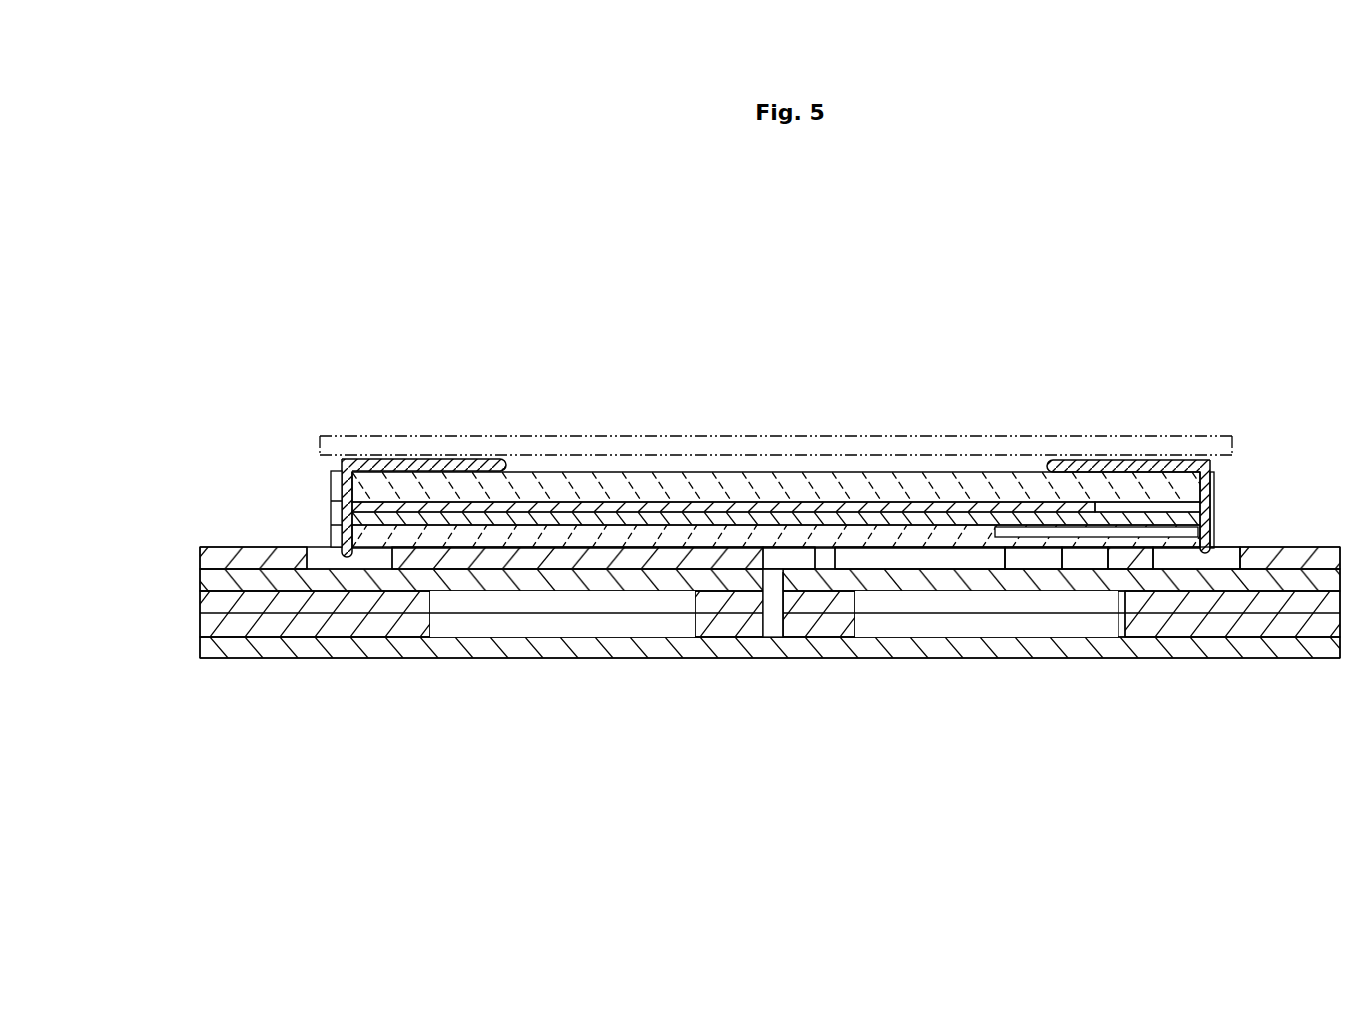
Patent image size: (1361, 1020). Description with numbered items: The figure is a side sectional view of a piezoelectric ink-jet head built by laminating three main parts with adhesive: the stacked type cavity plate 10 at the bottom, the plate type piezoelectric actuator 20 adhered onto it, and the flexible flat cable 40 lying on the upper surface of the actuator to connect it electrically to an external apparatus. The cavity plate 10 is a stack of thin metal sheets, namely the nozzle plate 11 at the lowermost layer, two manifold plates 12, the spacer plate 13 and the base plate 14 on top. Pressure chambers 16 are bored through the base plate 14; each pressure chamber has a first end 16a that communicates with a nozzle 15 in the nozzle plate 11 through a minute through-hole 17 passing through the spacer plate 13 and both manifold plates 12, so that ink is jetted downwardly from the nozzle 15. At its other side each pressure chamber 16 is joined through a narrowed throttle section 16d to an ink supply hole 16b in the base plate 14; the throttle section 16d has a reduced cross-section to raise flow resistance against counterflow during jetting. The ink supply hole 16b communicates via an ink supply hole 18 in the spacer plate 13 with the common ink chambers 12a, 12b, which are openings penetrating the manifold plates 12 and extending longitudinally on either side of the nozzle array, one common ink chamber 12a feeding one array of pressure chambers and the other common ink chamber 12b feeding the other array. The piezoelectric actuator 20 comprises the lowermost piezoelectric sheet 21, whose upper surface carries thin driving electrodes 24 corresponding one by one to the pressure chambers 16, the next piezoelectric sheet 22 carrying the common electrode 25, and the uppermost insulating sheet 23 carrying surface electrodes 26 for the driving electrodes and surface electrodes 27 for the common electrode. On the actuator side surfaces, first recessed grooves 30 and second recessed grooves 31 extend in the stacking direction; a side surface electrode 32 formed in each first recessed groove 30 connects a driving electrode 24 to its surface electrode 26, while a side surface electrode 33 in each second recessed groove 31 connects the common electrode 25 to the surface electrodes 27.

The cavity plate 10 is at (717, 592).
The nozzle plate 11 is at (744, 644).
The manifold plate 12 is at (205, 602).
The common ink chamber 12a is at (500, 622).
The common ink chamber 12b is at (940, 625).
The spacer plate 13 is at (205, 580).
The base plate 14 is at (205, 556).
The nozzle 15 is at (770, 640).
The pressure chamber 16 is at (955, 565).
The first end of pressure chamber 16a is at (763, 552).
The ink supply hole 16b is at (1095, 555).
The throttle section 16d is at (1037, 556).
The through-hole 17 is at (785, 622).
The ink supply hole 18 is at (1093, 577).
The piezoelectric actuator 20 is at (776, 433).
The piezoelectric sheet 21 is at (455, 532).
The piezoelectric sheet 22 is at (410, 518).
The insulating sheet 23 is at (370, 488).
The driving electrode 24 is at (1088, 532).
The common electrode 25 is at (745, 506).
The surface electrode 26 is at (1118, 466).
The surface electrode 27 is at (495, 460).
The first recessed groove 30 is at (767, 434).
The second recessed groove 31 is at (333, 487).
The side surface electrode 32 is at (1214, 480).
The side surface electrode 33 is at (342, 522).
The flexible flat cable 40 is at (935, 438).